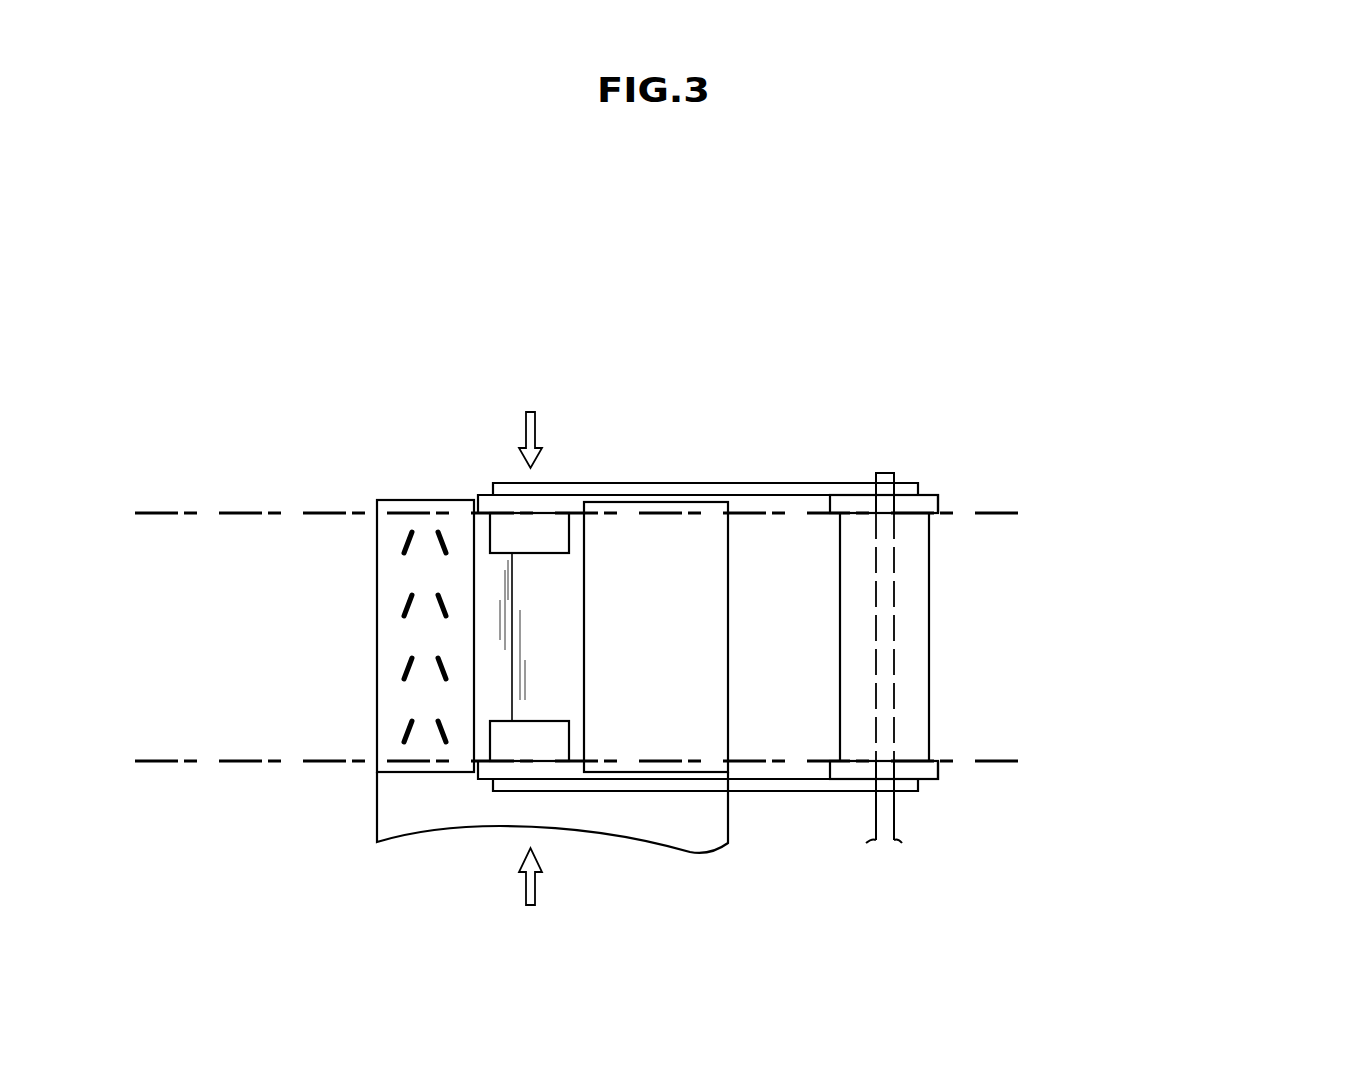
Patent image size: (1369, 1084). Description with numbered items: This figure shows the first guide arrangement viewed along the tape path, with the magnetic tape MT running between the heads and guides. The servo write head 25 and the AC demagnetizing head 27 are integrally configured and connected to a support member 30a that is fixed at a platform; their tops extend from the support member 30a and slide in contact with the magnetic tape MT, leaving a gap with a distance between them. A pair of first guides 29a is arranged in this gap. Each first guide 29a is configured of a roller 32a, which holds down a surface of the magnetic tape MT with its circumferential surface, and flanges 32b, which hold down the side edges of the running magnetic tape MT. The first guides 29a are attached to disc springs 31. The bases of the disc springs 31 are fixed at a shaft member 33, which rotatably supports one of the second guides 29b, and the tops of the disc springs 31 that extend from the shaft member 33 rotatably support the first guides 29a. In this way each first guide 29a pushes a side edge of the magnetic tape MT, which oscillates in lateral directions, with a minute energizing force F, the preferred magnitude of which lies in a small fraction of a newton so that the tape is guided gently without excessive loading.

The magnetic tape MT is at (242, 511).
The servo write head 25 is at (377, 607).
The AC demagnetizing head 27 is at (712, 728).
The first guide 29a is at (654, 646).
The second guide 29b is at (938, 505).
The support member 30a is at (377, 818).
The disc spring 31 is at (793, 485).
The roller 32a is at (568, 538).
The flange 32b is at (557, 500).
The shaft member 33 is at (892, 636).
The energizing force F is at (530, 656).